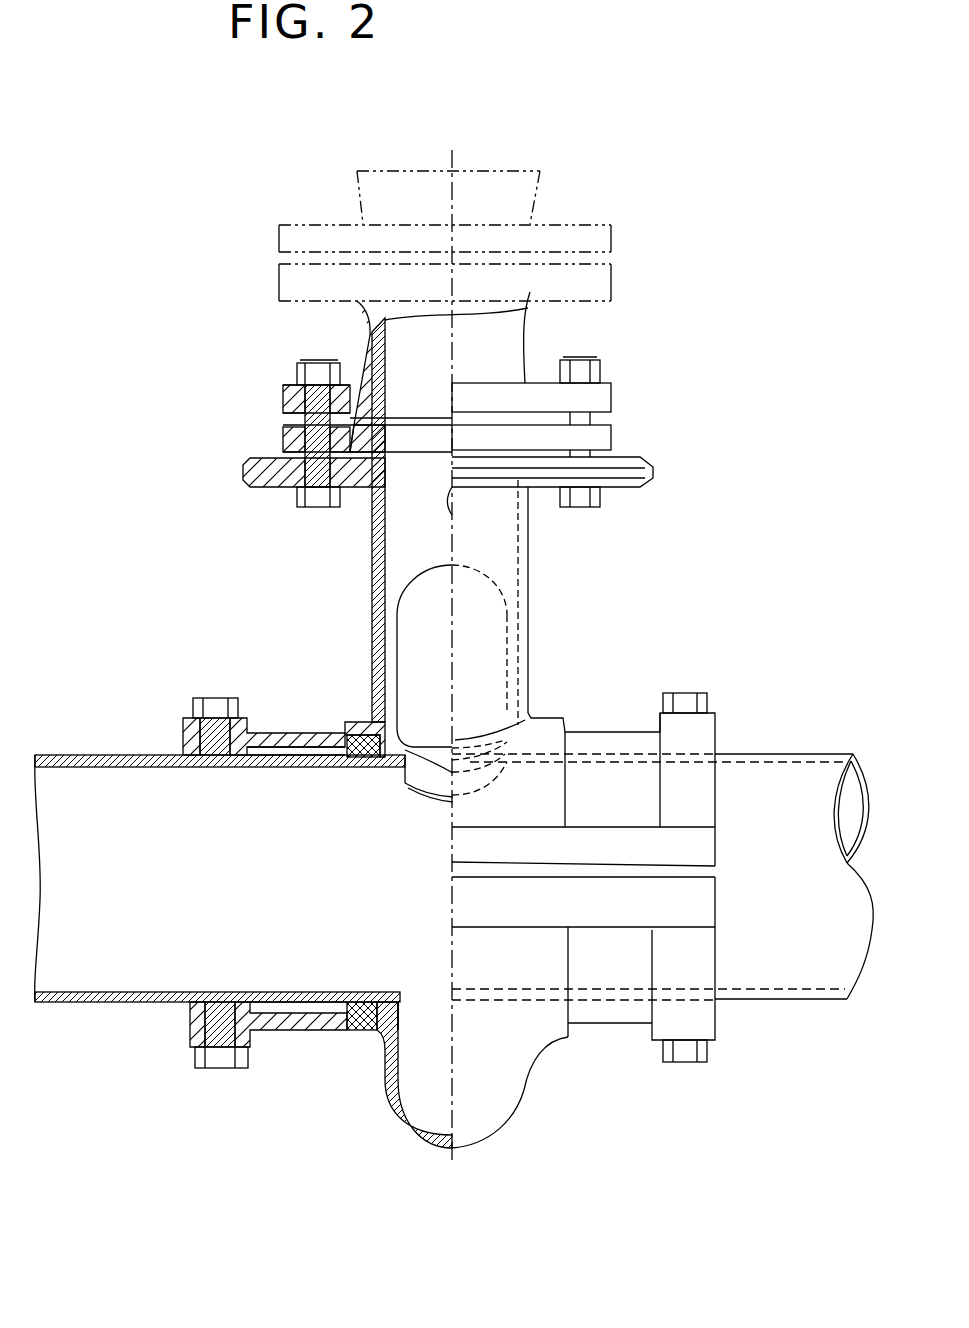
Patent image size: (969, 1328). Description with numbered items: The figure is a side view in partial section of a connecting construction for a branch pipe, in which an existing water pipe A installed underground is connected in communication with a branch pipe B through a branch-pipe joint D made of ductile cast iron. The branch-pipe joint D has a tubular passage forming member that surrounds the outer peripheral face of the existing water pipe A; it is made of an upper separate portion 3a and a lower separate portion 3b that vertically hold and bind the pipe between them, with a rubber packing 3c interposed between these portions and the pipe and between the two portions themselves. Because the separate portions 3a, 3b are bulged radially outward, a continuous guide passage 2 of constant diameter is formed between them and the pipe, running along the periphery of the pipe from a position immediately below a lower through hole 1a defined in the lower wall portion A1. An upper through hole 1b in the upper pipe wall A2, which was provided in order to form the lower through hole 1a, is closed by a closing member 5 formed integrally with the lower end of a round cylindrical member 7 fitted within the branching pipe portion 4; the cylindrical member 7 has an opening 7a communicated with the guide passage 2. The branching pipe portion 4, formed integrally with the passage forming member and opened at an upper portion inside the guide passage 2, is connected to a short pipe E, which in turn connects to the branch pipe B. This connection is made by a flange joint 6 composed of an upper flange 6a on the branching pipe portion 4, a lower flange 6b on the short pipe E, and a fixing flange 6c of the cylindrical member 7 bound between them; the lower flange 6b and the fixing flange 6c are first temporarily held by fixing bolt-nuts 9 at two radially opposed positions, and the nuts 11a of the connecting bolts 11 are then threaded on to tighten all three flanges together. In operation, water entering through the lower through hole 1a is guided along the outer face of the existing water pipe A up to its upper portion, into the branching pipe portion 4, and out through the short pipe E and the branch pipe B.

The existing water pipe A is at (767, 752).
The lower wall portion A1 is at (282, 1035).
The upper pipe wall A2 is at (287, 737).
The branch pipe B is at (532, 218).
The branch-pipe joint D is at (529, 626).
The short pipe E is at (527, 322).
The lower through hole 1a is at (427, 1006).
The upper through hole 1b is at (404, 784).
The guide passage 2 is at (436, 1102).
The upper separate portion 3a is at (610, 1020).
The lower separate portion 3b is at (608, 730).
The rubber packing 3c is at (358, 733).
The branching pipe portion 4 is at (530, 542).
The closing member 5 is at (435, 780).
The flange joint 6 is at (457, 447).
The upper flange 6a is at (642, 487).
The lower flange 6b is at (612, 393).
The fixing flange 6c is at (283, 433).
The cylindrical member 7 is at (370, 556).
The opening 7a is at (422, 618).
The fixing bolt-nuts 9 is at (297, 363).
The connecting bolts 11 is at (298, 508).
The nuts 11a is at (603, 367).